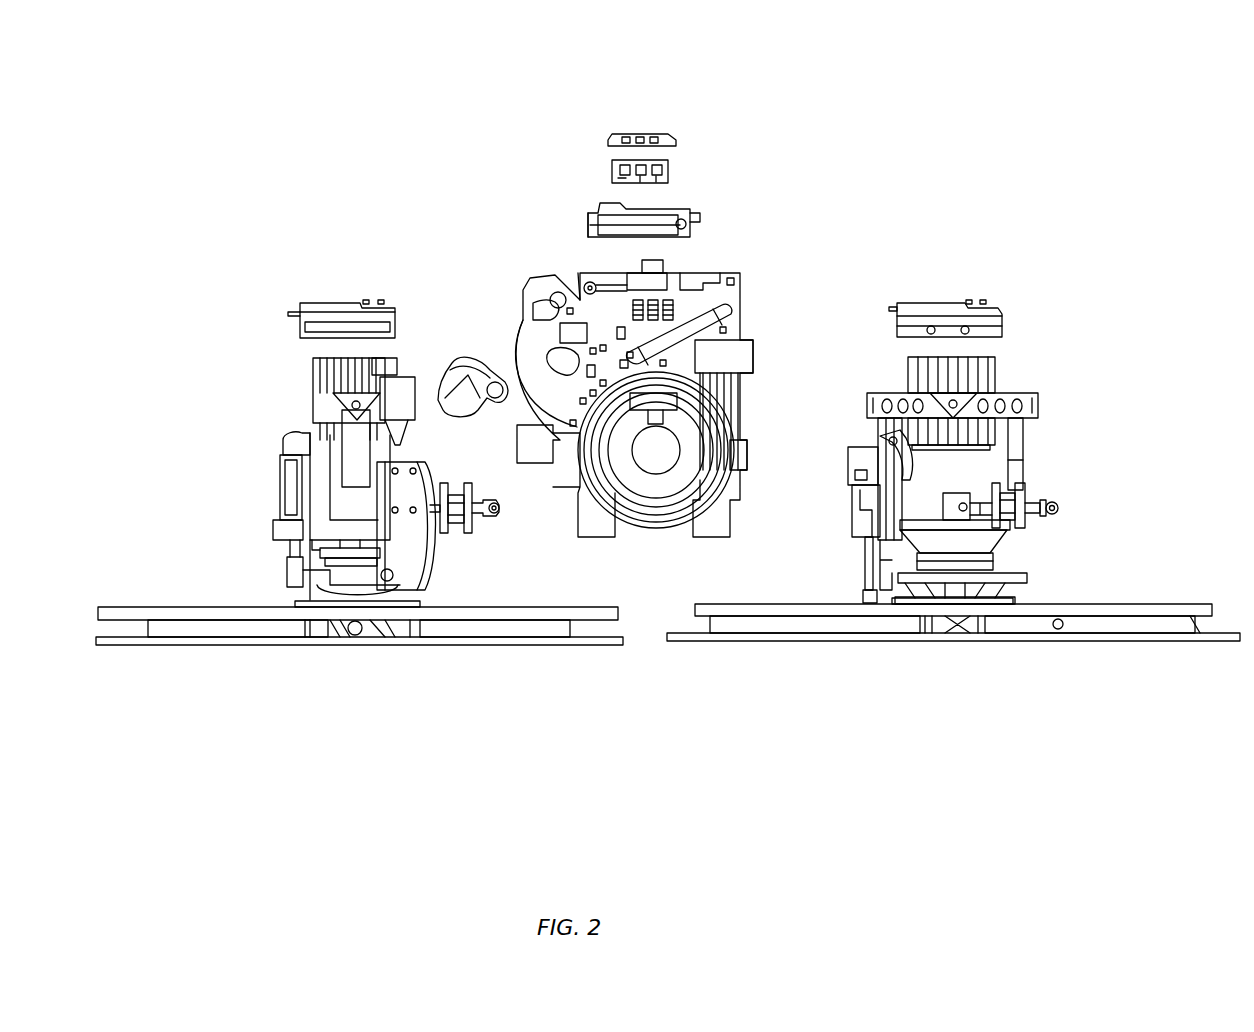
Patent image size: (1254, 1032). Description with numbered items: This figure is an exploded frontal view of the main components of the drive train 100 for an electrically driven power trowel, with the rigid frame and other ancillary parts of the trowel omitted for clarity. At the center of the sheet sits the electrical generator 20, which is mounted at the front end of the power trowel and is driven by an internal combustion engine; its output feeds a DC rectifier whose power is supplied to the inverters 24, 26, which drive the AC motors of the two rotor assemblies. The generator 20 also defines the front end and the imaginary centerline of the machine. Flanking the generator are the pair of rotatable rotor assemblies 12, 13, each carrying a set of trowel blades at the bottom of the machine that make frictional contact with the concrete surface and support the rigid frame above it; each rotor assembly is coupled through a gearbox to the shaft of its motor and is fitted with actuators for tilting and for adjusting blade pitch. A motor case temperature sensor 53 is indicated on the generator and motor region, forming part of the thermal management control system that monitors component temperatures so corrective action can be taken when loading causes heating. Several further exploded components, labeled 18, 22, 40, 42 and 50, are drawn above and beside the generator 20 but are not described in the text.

The drive train 100 is at (646, 43).
The rotor assembly 12 is at (450, 660).
The rotor assembly 13 is at (1105, 645).
The circuit board 18 is at (532, 262).
The electrical generator 20 is at (668, 474).
The connector housing 22 is at (698, 226).
The inverter 24 is at (303, 306).
The inverter 26 is at (1018, 318).
The cover plate 40 is at (680, 128).
The connector block 42 is at (680, 170).
The bracket 50 is at (456, 346).
The motor case temperature sensor 53 is at (663, 416).